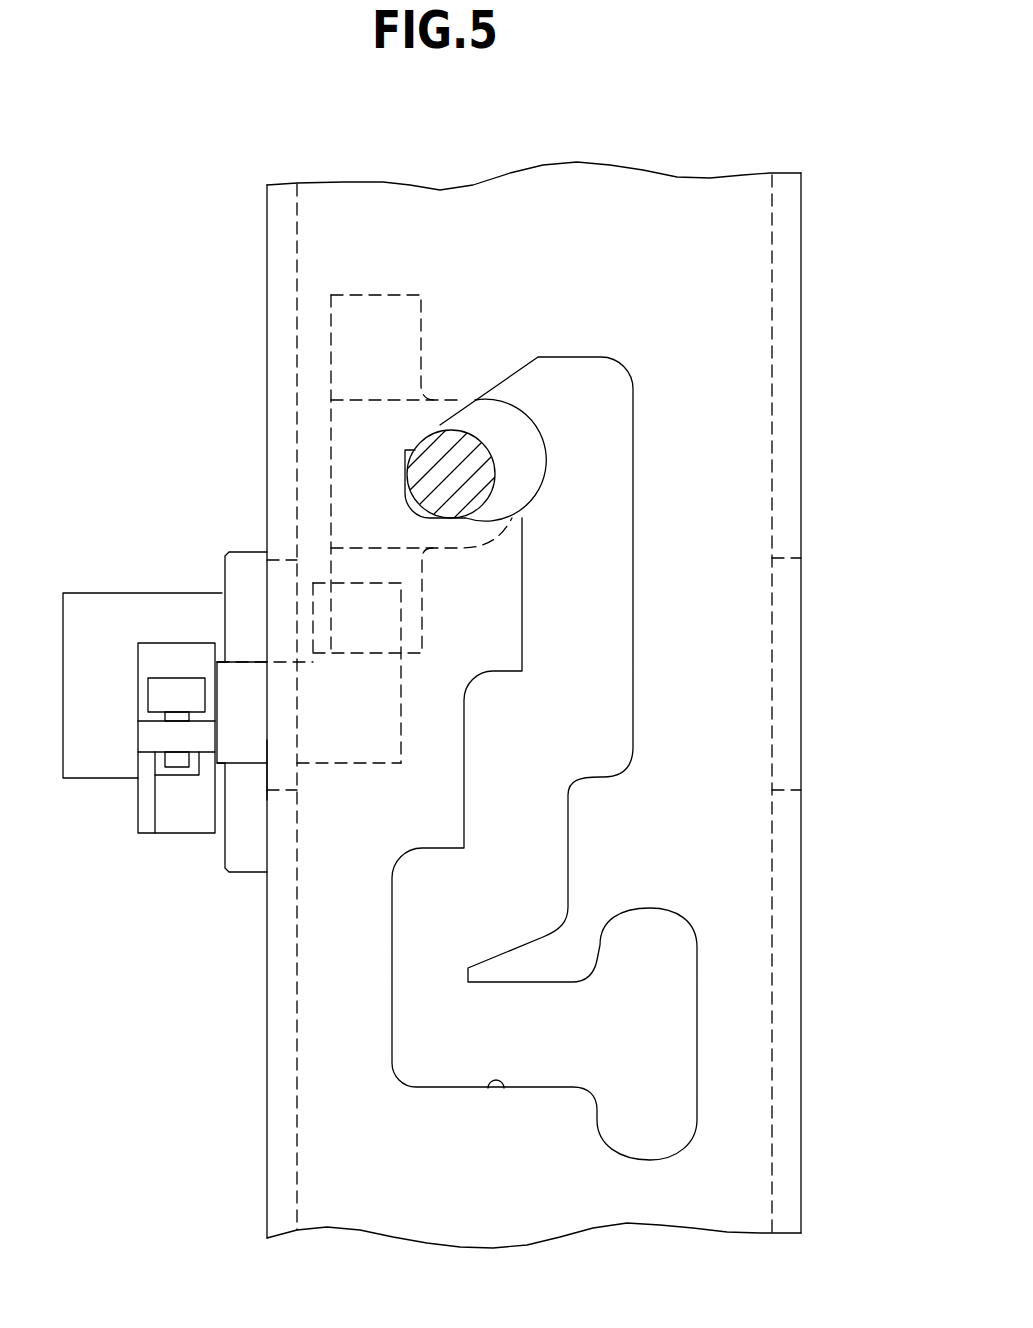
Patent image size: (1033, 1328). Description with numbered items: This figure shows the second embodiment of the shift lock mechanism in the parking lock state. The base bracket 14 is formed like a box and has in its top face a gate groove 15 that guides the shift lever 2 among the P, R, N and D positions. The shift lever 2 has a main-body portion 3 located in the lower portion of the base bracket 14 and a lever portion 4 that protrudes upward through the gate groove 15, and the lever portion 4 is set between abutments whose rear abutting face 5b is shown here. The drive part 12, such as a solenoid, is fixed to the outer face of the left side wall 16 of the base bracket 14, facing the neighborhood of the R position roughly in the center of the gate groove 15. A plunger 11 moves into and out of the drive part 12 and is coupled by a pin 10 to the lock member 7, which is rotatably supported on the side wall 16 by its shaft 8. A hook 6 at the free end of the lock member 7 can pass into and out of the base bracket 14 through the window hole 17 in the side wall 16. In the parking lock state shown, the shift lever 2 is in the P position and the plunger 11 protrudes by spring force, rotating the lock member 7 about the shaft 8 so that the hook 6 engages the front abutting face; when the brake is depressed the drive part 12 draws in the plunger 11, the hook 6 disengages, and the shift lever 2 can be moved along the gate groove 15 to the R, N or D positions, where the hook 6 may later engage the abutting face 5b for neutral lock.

The shift lever 2 is at (471, 440).
The main-body portion 3 is at (527, 493).
The lever portion 4 is at (495, 470).
The abutting face 5b is at (408, 342).
The hook 6 is at (401, 705).
The lock member 7 is at (145, 738).
The shaft 8 is at (240, 552).
The pin 10 is at (177, 763).
The plunger 11 is at (170, 687).
The drive part 12 is at (103, 593).
The base bracket 14 is at (650, 205).
The gate groove 15 is at (488, 1088).
The side wall 16 is at (282, 355).
The window hole 17 is at (280, 777).